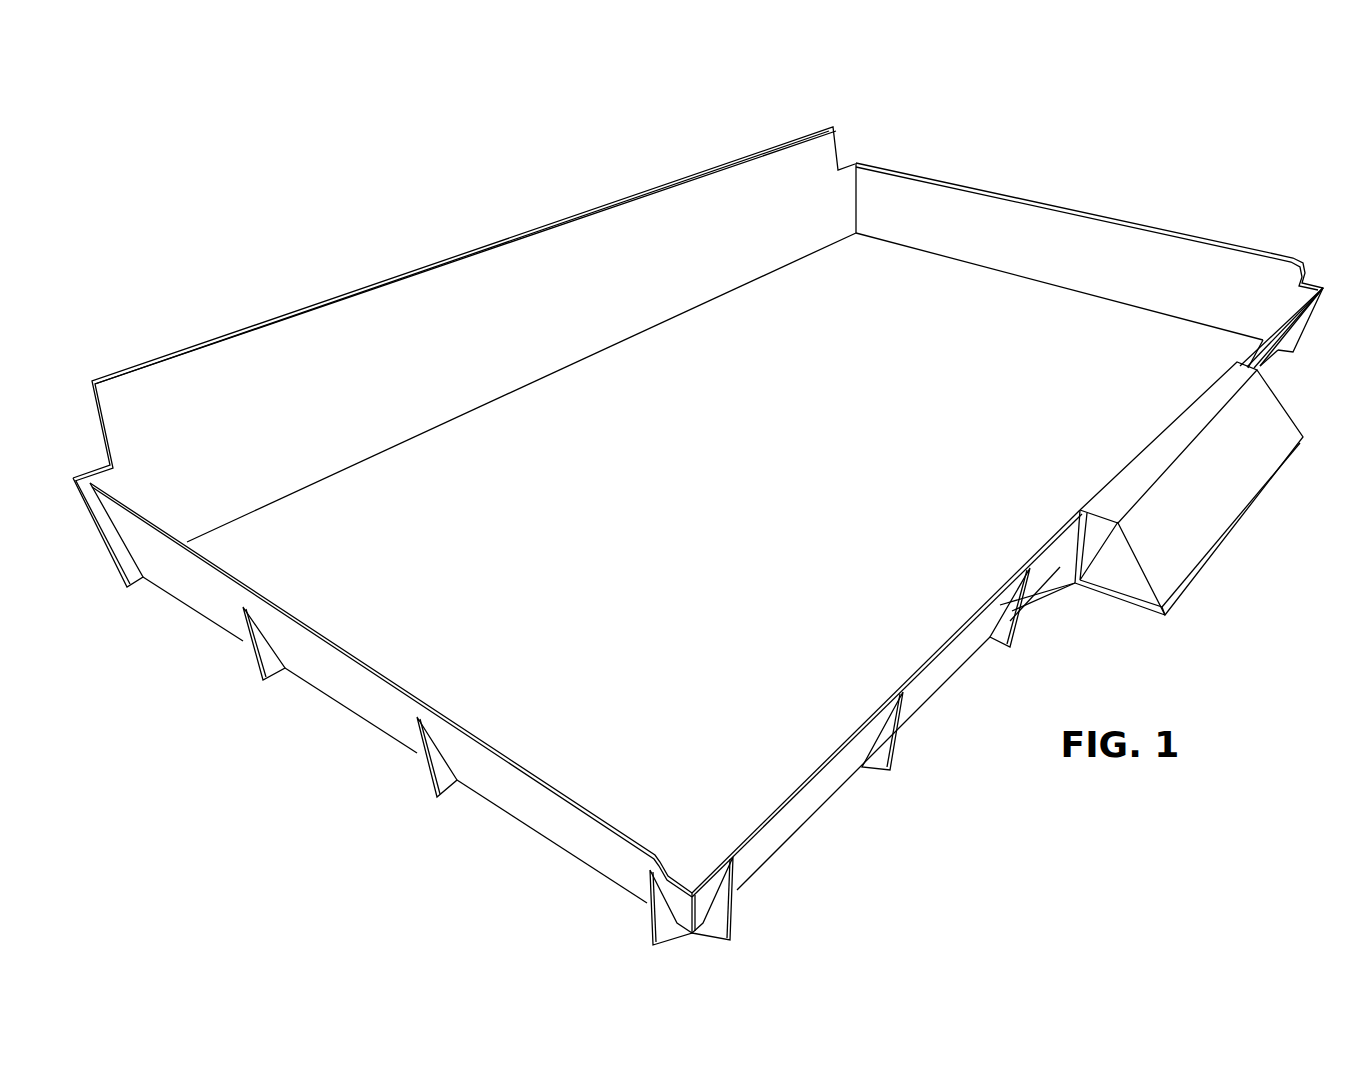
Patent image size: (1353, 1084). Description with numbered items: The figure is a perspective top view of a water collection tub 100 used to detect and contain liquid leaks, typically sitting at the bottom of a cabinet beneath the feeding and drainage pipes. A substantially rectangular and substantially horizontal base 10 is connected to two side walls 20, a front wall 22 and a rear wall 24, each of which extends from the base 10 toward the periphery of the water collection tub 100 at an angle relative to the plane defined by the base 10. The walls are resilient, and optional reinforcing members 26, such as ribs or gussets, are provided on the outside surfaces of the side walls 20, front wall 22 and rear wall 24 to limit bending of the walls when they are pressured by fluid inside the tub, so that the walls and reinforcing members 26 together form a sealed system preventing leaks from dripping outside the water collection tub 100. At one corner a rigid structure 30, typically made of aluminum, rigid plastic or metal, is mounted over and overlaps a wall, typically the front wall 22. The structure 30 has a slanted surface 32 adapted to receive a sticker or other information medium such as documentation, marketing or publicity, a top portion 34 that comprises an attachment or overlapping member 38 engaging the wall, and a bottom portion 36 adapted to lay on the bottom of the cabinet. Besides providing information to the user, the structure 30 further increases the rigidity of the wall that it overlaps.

The water collection tub 100 is at (427, 243).
The base 10 is at (873, 328).
The side walls 20 is at (1093, 260).
The front wall 22 is at (802, 807).
The rear wall 24 is at (613, 240).
The reinforcing members 26 is at (270, 670).
The structure 30 is at (1166, 514).
The slanted surface 32 is at (1213, 508).
The top portion 34 is at (1202, 415).
The bottom portion 36 is at (1120, 580).
The attachment or overlapping member 38 is at (1078, 510).